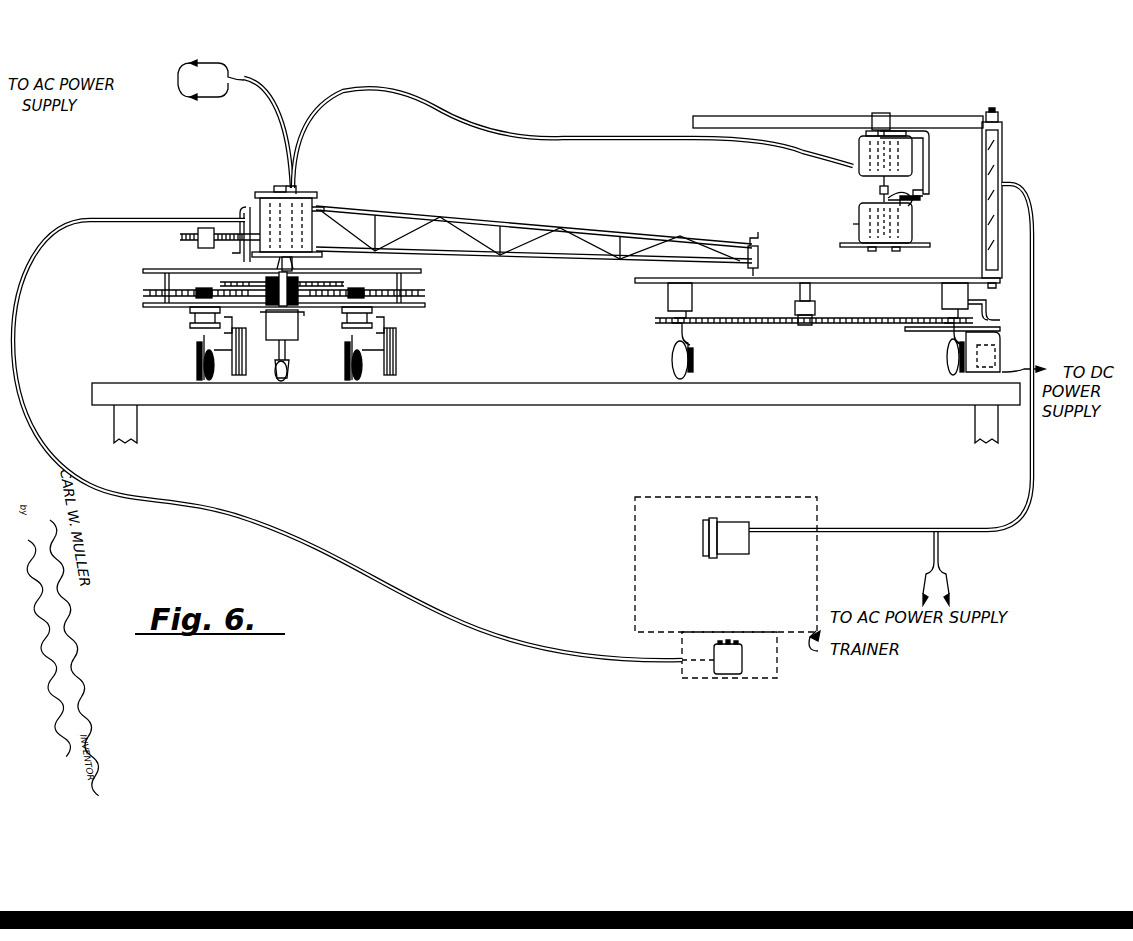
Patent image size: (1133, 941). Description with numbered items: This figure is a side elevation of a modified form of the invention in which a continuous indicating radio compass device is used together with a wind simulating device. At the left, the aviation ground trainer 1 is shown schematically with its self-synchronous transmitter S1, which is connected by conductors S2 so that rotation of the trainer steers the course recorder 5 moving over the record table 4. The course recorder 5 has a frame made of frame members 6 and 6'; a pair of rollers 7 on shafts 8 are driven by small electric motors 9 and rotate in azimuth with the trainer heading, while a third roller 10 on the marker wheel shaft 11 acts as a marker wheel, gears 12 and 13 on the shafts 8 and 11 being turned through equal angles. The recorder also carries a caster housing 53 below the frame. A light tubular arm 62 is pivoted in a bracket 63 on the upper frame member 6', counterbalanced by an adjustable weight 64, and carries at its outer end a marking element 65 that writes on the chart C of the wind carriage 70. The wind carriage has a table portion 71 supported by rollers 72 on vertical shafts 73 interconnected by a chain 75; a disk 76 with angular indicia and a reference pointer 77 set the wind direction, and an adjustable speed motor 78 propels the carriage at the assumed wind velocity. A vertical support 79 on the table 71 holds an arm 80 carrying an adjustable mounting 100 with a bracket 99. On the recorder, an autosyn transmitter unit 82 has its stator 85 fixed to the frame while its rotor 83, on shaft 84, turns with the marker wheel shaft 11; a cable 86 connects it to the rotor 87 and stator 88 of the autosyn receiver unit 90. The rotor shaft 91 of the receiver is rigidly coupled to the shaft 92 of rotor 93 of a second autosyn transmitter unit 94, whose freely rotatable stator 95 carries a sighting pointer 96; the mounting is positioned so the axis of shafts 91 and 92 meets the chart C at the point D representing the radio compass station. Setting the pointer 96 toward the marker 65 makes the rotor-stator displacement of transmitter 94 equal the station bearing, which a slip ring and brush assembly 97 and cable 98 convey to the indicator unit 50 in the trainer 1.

The aviation ground trainer 1 is at (804, 514).
The record table 4 is at (488, 376).
The course recorder 5 is at (425, 310).
The frame member 6 is at (295, 305).
The upper frame member 6' is at (298, 268).
The rollers 7 is at (196, 376).
The shafts 8 is at (190, 337).
The electric motors 9 is at (246, 368).
The third roller 10 is at (291, 368).
The marker wheel shaft 11 is at (288, 358).
The gear 12 is at (142, 294).
The gear 13 is at (352, 288).
The indicator unit 50 is at (744, 522).
The caster housing 53 is at (300, 330).
The tubular arm 62 is at (456, 222).
The bracket 63 is at (297, 259).
The adjustable weight 64 is at (196, 247).
The marking element 65 is at (756, 243).
The wind carriage 70 is at (785, 276).
The table portion 71 is at (638, 282).
The rollers 72 is at (672, 351).
The vertical shafts 73 is at (695, 335).
The chain 75 is at (752, 324).
The disk 76 is at (1001, 328).
The reference pointer 77 is at (986, 306).
The adjustable speed motor 78 is at (1003, 350).
The vertical support 79 is at (1003, 158).
The arm 80 is at (945, 114).
The autosyn transmitter unit 82 is at (270, 191).
The rotor 83 is at (306, 187).
The rotor shaft 84 is at (278, 262).
The stator 85 is at (316, 206).
The cable 86 is at (520, 103).
The rotor 87 is at (860, 183).
The stator 88 is at (874, 164).
The autosyn receiver unit 90 is at (856, 157).
The rotor shaft 91 is at (878, 192).
The shaft 92 is at (878, 202).
The rotor 93 is at (915, 209).
The autosyn transmitter unit 94 is at (912, 243).
The stator 95 is at (912, 228).
The sighting pointer 96 is at (854, 244).
The slip ring and brush assembly 97 is at (923, 197).
The cable 98 is at (1030, 236).
The bracket 99 is at (927, 159).
The adjustable mounting 100 is at (887, 113).
The chart C is at (917, 276).
The point D is at (876, 276).
The self-synchronous transmitter S1 is at (733, 676).
The conductors S2 is at (590, 650).